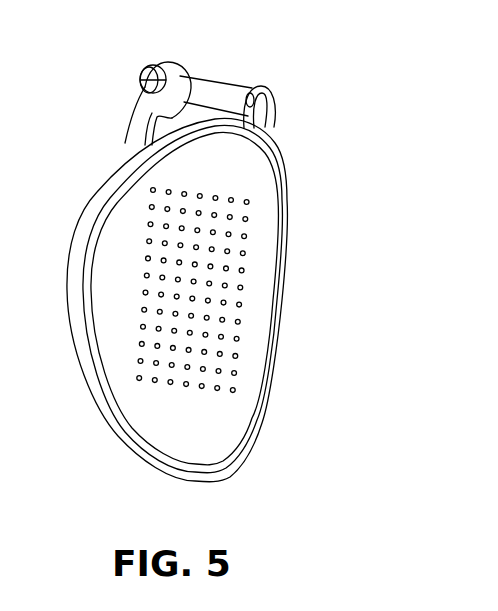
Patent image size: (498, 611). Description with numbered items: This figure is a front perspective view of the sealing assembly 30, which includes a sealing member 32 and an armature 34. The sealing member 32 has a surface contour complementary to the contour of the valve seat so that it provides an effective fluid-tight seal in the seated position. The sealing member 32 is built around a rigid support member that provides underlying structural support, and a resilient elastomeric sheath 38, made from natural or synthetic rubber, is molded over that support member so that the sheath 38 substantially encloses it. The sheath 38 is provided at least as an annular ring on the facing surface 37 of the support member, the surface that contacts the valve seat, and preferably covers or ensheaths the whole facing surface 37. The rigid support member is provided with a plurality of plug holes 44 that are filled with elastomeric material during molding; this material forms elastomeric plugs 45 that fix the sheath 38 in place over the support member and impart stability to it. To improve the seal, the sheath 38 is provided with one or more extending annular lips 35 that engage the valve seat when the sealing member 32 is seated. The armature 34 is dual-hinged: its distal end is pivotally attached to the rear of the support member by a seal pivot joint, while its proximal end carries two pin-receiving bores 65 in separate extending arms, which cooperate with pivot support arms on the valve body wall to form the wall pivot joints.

The sealing assembly 30 is at (313, 135).
The sealing member 32 is at (92, 297).
The armature 34 is at (130, 126).
The annular lips 35 is at (262, 423).
The facing surface 37 is at (242, 197).
The elastomeric sheath 38 is at (97, 222).
The plug holes 44 is at (244, 237).
The elastomeric plugs 45 is at (153, 208).
The pin-receiving bores 65 is at (143, 70).